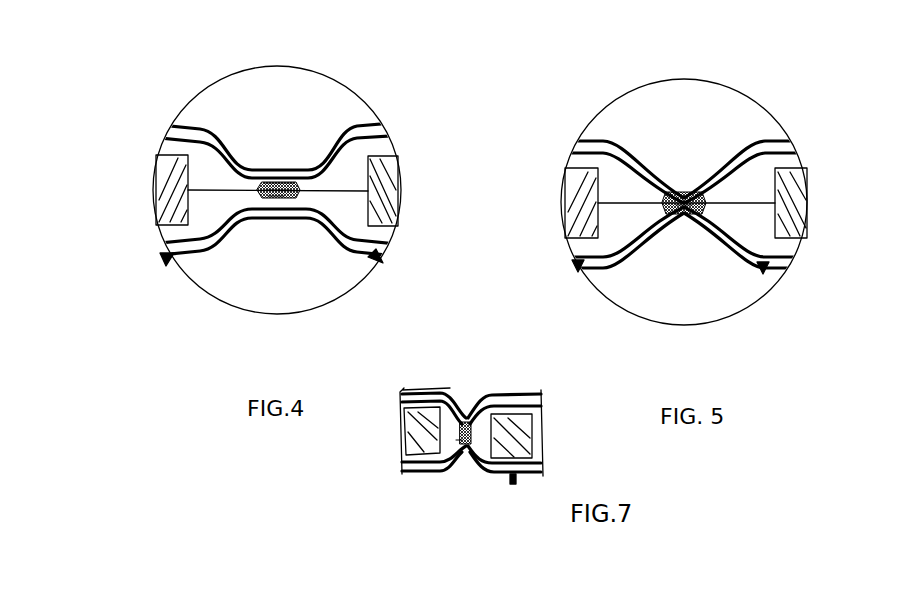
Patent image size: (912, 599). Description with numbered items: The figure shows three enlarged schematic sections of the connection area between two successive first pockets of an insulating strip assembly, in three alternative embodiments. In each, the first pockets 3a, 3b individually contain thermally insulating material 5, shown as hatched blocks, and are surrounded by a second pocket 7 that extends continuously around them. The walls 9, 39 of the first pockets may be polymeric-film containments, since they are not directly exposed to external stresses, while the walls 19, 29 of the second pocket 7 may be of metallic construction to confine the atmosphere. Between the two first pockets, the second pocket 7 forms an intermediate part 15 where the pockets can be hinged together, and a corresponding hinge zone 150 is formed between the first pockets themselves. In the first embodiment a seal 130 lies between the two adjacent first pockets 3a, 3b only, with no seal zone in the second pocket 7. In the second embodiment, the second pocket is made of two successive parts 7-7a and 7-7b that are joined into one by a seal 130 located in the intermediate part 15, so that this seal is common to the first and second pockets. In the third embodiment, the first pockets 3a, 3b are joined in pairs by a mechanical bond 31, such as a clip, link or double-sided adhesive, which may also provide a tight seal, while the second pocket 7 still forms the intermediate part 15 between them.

In FIG. 4, the thermally insulating material 5 is at (172, 192).
In FIG. 5, the thermally insulating material 5 is at (575, 205).
In FIG. 7, the thermally insulating material 5 is at (410, 431).
In FIG. 4, the first pocket 3a is at (178, 127).
In FIG. 5, the first pocket 3a is at (583, 141).
In FIG. 7, the first pocket 3a is at (428, 472).
In FIG. 4, the first pocket 3b is at (372, 262).
In FIG. 5, the first pocket 3b is at (770, 276).
In FIG. 7, the first pocket 3b is at (514, 478).
In FIG. 4, the second pocket 7 is at (343, 254).
In FIG. 7, the second pocket 7 is at (428, 392).
In FIG. 4, the wall 9 is at (241, 162).
In FIG. 5, the wall 9 is at (778, 152).
In FIG. 4, the intermediate part 15 is at (281, 170).
In FIG. 7, the intermediate part 15 is at (465, 462).
In FIG. 4, the wall 19 is at (340, 165).
In FIG. 5, the wall 19 is at (635, 152).
In FIG. 4, the wall 29 is at (320, 228).
In FIG. 5, the wall 29 is at (630, 256).
In FIG. 7, the mechanical bond 31 is at (468, 418).
In FIG. 4, the wall 39 is at (185, 252).
In FIG. 5, the wall 39 is at (590, 262).
In FIG. 4, the seal 130 is at (274, 198).
In FIG. 5, the seal 130 is at (684, 214).
In FIG. 4, the hinge zone 150 is at (272, 195).
In FIG. 5, the second pocket part 7-7a is at (608, 276).
In FIG. 5, the second pocket part 7-7b is at (777, 284).